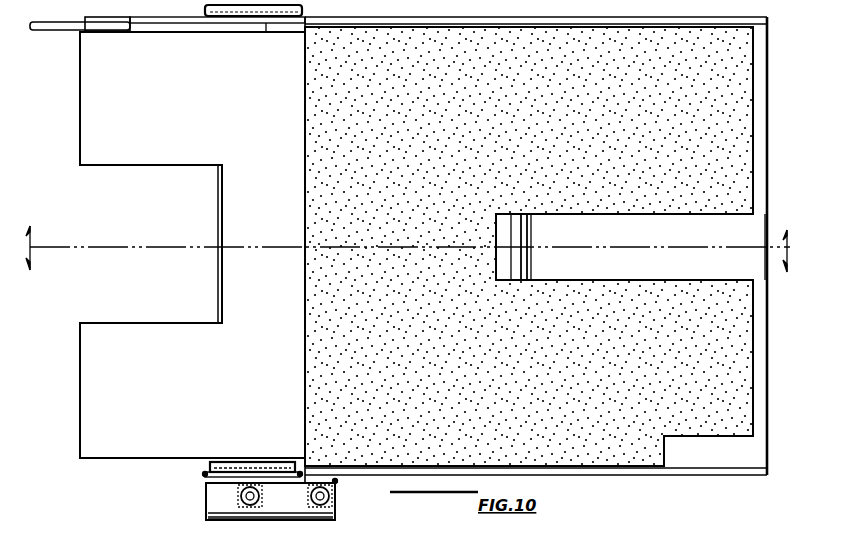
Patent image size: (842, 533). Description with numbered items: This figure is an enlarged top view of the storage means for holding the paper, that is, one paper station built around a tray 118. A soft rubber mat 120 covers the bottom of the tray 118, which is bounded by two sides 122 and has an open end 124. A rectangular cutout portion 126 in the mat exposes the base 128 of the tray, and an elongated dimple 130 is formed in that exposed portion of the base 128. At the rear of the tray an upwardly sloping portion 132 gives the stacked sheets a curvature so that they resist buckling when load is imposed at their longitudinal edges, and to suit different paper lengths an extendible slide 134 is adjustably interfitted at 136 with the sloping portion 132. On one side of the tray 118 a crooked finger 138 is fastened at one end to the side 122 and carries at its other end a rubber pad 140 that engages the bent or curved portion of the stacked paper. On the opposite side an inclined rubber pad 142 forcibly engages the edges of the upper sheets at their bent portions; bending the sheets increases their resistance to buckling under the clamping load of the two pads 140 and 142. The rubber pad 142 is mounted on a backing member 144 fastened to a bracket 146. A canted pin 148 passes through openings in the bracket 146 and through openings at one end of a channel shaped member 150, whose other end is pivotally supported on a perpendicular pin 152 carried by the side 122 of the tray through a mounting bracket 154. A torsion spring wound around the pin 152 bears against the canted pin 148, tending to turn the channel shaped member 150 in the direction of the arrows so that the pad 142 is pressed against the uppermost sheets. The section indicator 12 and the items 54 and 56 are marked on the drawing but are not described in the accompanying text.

The section line 12- 12 is at (408, 239).
The housing body 54 is at (167, 245).
The mounting bracket 56 is at (205, 516).
The tray 118 is at (128, 168).
The soft rubber mat 120 is at (518, 34).
The sides 122 is at (452, 22).
The open end 124 is at (770, 470).
The rectangular cutout portion 126 is at (620, 280).
The base 128 is at (752, 268).
The elongated dimple 130 is at (533, 241).
The upwardly sloping portion 132 is at (186, 158).
The extendible slide 134 is at (48, 31).
The interfit 136 is at (130, 32).
The crooked finger 138 is at (308, 12).
The rubber pad 140 is at (240, 24).
The inclined rubber pad 142 is at (290, 457).
The backing member 144 is at (204, 473).
The bracket 146 is at (222, 441).
The canted pin 148 is at (240, 494).
The channel shaped member 150 is at (335, 517).
The perpendicular pin 152 is at (330, 499).
The mounting bracket 154 is at (337, 482).